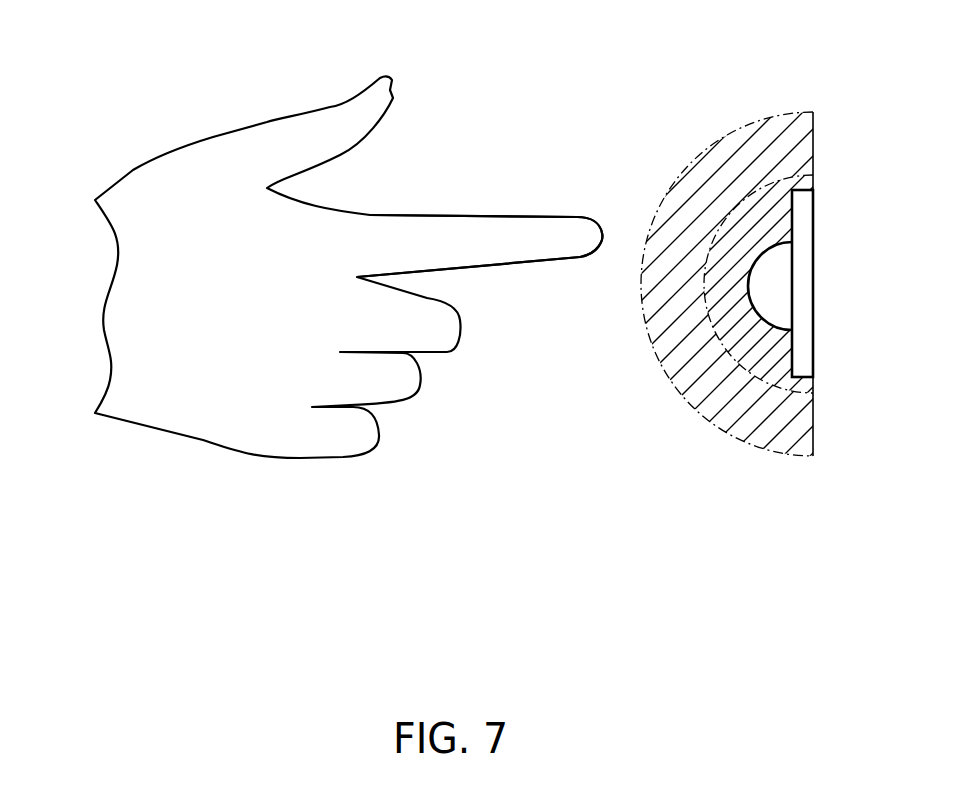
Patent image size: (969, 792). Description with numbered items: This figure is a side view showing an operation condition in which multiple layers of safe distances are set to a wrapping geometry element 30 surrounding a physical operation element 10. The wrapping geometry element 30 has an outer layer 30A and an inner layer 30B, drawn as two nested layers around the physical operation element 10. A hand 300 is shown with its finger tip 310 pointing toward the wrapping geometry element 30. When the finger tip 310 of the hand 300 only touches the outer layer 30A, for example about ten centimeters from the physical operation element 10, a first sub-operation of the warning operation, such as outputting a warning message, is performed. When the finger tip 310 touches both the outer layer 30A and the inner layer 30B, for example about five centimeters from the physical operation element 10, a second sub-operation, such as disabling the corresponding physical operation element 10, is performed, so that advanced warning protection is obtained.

The hand 300 is at (138, 132).
The finger tip 310 is at (577, 227).
The wrapping geometry element 30 is at (626, 256).
The outer layer 30A is at (720, 165).
The inner layer 30B is at (728, 327).
The physical operation element 10 is at (775, 283).